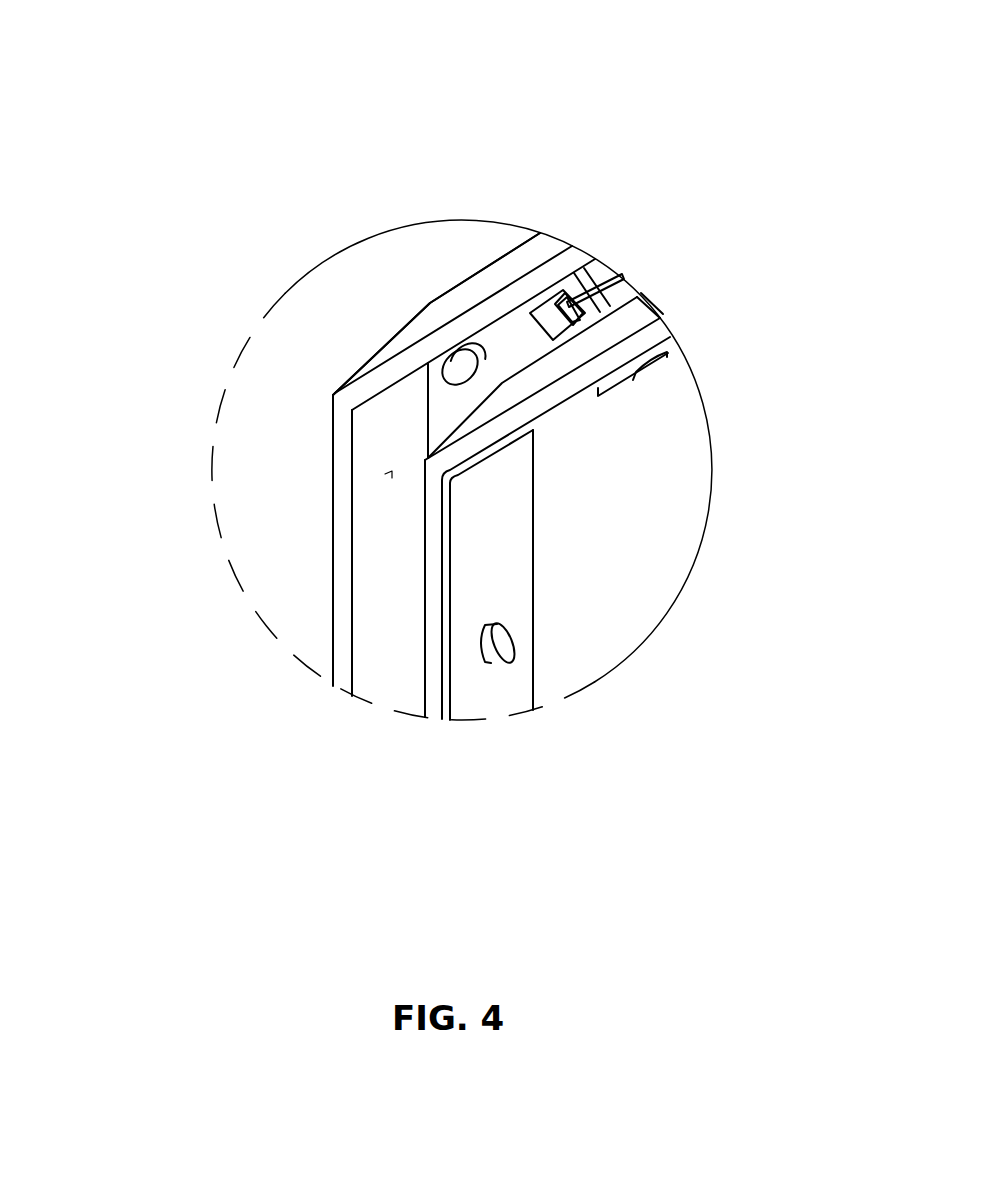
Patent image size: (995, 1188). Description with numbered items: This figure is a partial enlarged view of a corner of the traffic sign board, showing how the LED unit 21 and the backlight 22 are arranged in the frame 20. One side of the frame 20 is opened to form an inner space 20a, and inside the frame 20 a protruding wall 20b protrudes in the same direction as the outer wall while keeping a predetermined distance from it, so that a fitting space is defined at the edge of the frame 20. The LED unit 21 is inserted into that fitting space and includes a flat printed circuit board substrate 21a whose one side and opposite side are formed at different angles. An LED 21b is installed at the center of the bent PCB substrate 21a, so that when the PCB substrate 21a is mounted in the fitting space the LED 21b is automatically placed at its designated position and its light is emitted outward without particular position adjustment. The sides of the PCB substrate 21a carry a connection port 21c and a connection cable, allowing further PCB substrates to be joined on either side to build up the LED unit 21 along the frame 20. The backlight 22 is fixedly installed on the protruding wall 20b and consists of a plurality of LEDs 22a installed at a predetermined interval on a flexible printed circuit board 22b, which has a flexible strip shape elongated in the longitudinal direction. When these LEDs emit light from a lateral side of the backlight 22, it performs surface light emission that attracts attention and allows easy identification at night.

The frame 20 is at (333, 540).
The inner space 20a is at (633, 480).
The protruding wall 20b is at (436, 667).
The LED unit 21 is at (187, 52).
The PCB substrate 21a is at (512, 345).
The LED 21b is at (458, 368).
The connection port 21c is at (547, 318).
The backlight 22 is at (740, 688).
The LEDs 22a is at (505, 638).
The flexible printed circuit board 22b is at (497, 531).